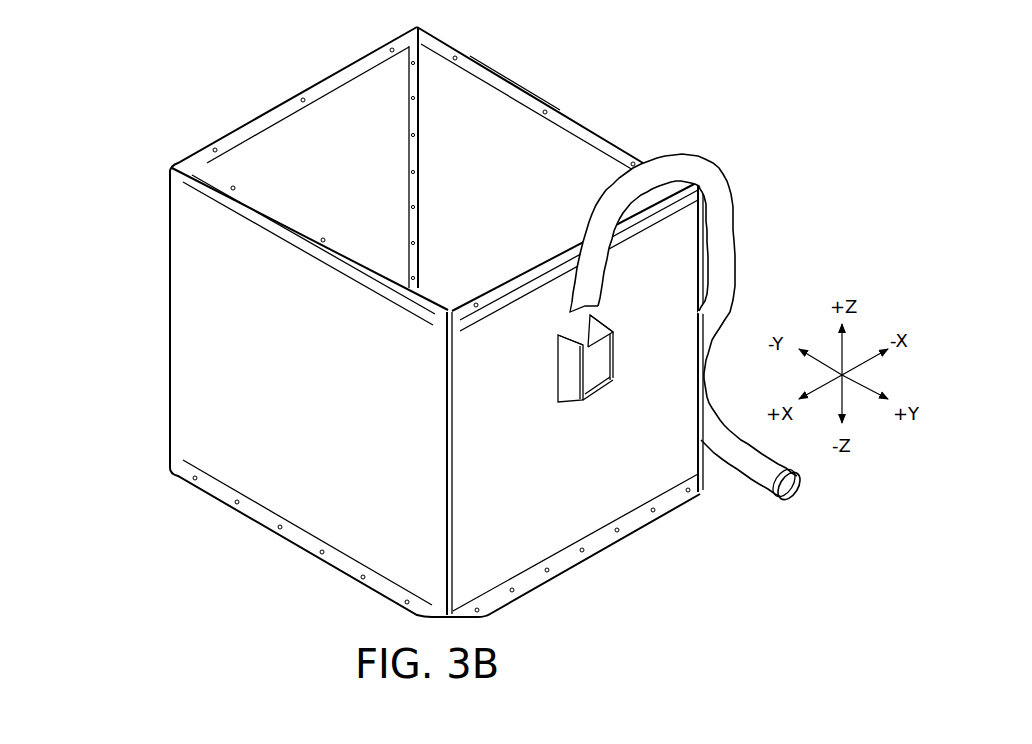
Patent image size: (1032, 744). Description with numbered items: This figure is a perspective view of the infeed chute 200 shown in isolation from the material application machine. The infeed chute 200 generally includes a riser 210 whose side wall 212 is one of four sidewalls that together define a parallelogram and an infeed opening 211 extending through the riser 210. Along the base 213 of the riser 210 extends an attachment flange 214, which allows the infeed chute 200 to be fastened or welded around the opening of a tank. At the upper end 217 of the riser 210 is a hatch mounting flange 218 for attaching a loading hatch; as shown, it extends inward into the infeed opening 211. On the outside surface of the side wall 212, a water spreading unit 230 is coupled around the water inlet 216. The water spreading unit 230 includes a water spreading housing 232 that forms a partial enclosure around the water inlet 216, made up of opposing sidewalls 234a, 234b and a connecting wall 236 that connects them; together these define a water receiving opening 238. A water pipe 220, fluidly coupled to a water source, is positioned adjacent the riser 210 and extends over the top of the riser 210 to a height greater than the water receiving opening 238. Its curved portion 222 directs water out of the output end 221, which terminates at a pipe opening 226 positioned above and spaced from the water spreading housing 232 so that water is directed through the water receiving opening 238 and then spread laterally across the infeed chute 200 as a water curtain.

The infeed chute 200 is at (375, 311).
The riser 210 is at (543, 156).
The infeed opening 211 is at (525, 92).
The side wall 212 is at (575, 384).
The base 213 is at (247, 538).
The attachment flange 214 is at (575, 565).
The water inlet 216 is at (583, 345).
The upper end 217 is at (253, 372).
The hatch mounting flange 218 is at (202, 157).
The water pipe 220 is at (678, 300).
The output end 221 is at (575, 238).
The curved portion 222 is at (705, 157).
The pipe opening 226 is at (572, 300).
The water spreading unit 230 is at (580, 369).
The water spreading housing 232 is at (638, 283).
The opposing sidewall 234a is at (613, 338).
The opposing sidewall 234b is at (557, 386).
The connecting wall 236 is at (599, 376).
The water receiving opening 238 is at (617, 327).